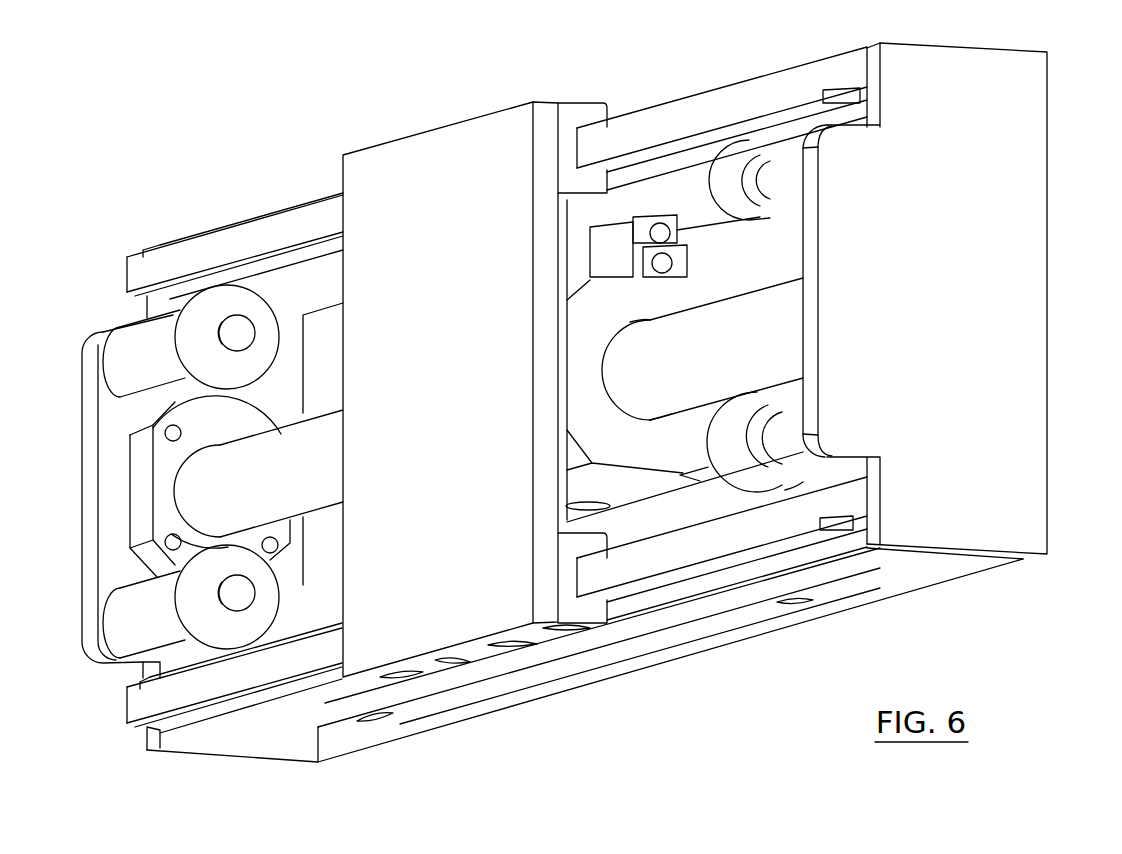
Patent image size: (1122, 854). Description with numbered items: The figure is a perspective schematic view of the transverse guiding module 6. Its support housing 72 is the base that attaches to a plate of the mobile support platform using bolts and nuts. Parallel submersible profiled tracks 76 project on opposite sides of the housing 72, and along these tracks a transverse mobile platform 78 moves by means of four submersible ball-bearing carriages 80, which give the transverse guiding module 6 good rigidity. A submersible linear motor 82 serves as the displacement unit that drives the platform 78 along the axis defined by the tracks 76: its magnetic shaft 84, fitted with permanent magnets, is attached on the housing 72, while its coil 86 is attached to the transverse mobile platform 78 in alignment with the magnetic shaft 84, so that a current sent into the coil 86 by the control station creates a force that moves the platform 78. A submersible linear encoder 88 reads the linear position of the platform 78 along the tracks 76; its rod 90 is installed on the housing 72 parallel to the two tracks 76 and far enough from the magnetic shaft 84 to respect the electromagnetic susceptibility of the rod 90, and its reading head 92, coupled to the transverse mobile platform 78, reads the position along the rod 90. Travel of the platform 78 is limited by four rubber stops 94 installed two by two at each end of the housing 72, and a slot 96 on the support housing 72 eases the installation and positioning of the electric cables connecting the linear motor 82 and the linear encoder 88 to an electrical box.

The transverse guiding module 6 is at (205, 136).
The support housing 72 is at (1030, 475).
The submersible profiled tracks 76 is at (190, 250).
The transverse mobile platform 78 is at (425, 145).
The submersible ball-bearing carriages 80 is at (545, 637).
The submersible linear motor 82 is at (800, 262).
The magnetic shaft 84 is at (787, 348).
The coil 86 is at (740, 282).
The submersible linear encoder 88 is at (647, 200).
The rod 90 is at (697, 227).
The reading head 92 is at (623, 227).
The rubber stops 94 is at (185, 322).
The slot 96 is at (693, 639).